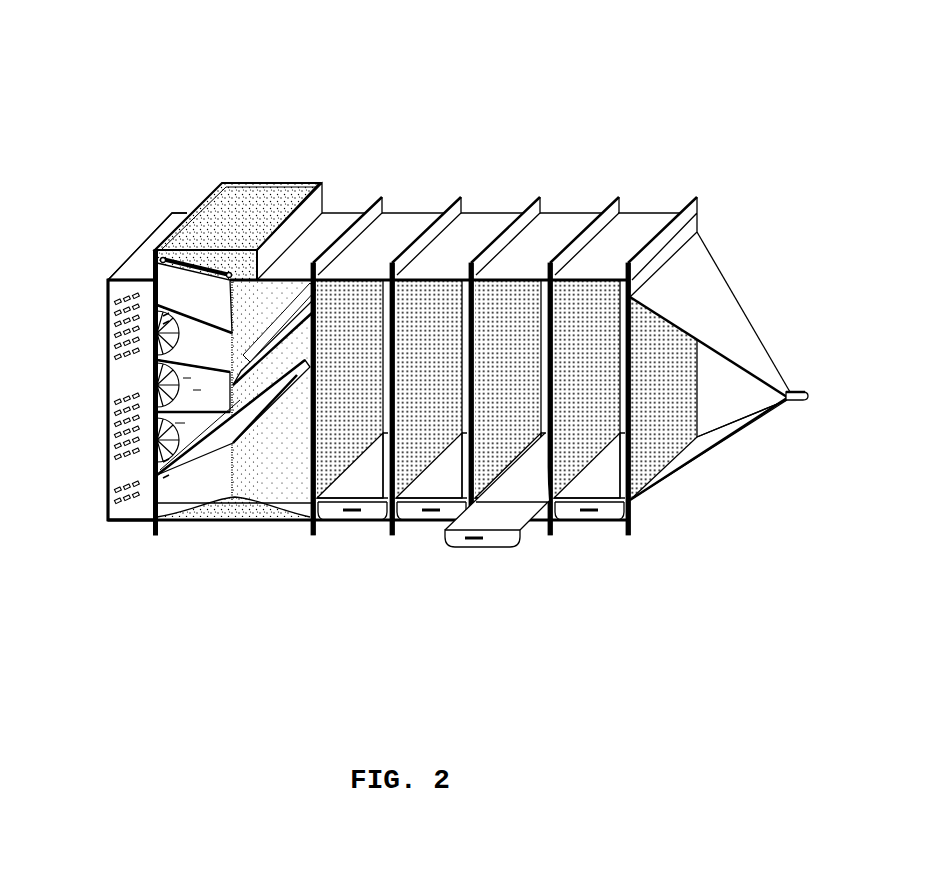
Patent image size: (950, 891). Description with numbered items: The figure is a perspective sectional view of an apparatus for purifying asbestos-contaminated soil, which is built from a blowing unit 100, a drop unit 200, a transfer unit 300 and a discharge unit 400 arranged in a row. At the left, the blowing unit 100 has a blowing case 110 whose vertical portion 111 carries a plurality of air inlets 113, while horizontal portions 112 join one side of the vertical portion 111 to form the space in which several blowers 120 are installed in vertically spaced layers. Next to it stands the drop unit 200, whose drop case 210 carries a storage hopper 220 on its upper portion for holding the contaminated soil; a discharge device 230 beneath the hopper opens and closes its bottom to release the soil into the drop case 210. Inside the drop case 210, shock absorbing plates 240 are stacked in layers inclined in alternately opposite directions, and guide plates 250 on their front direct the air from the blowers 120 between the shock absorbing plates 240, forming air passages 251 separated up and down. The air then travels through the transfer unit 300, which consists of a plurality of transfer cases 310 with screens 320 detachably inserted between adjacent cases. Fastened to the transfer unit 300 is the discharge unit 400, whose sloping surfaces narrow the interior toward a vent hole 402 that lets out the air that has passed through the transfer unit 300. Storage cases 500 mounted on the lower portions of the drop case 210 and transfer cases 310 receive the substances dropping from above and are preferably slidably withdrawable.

The blowing unit 100 is at (131, 226).
The blowing case 110 is at (54, 234).
The vertical portion 111 is at (107, 317).
The horizontal portions 112 is at (127, 268).
The air inlets 113 is at (107, 337).
The blowers 120 is at (165, 372).
The drop unit 200 is at (272, 168).
The drop case 210 is at (157, 480).
The storage hopper 220 is at (315, 200).
The discharge device 230 is at (160, 230).
The shock absorbing plates 240 is at (232, 427).
The guide plates 250 is at (155, 520).
The air passages 251 is at (150, 485).
The transfer unit 300 is at (488, 182).
The transfer cases 310 is at (365, 285).
The screens 320 is at (423, 297).
The discharge unit 400 is at (733, 245).
The vent hole 402 is at (793, 405).
The storage cases 500 is at (283, 520).